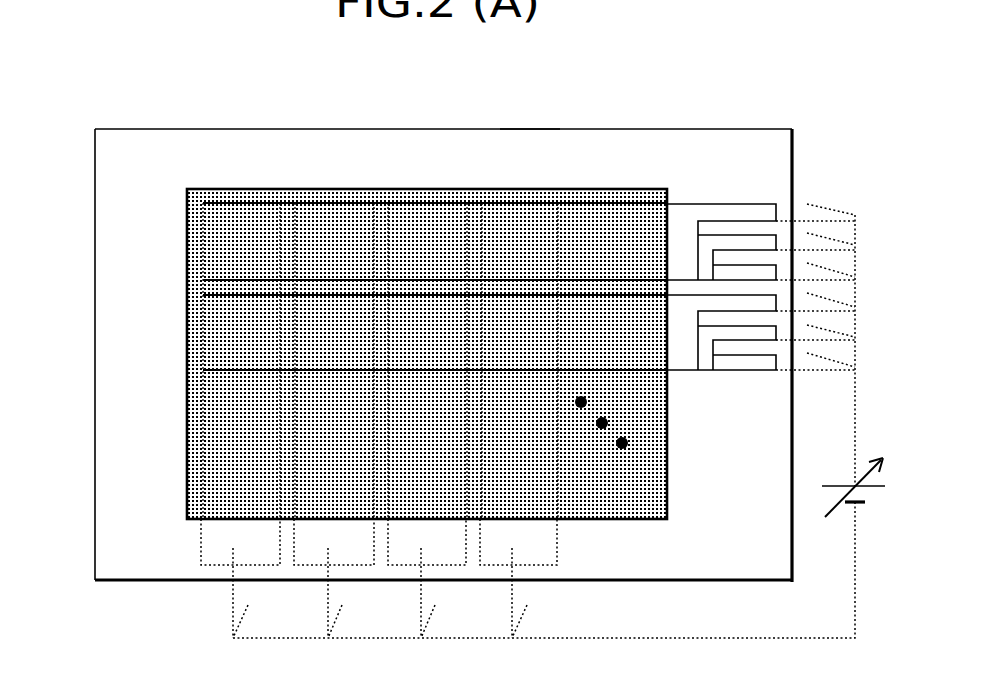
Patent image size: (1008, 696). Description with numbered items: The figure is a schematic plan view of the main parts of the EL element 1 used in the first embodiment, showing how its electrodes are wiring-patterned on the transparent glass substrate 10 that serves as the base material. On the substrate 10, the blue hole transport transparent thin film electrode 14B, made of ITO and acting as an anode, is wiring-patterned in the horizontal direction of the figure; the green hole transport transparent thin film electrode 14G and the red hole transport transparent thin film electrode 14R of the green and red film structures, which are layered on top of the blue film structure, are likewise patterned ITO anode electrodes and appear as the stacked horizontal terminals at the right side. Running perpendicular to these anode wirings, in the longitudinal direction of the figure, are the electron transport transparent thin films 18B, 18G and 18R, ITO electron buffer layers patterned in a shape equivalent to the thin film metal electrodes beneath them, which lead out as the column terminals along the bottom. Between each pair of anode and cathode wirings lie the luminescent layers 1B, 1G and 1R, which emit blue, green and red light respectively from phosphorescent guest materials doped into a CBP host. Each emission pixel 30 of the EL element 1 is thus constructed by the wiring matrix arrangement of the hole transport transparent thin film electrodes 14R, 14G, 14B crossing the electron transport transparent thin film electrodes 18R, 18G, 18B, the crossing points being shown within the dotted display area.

The EL element 1 is at (528, 129).
The transparent glass substrate 10 is at (647, 138).
The emission pixel 30 is at (217, 247).
The luminescent layer that emits red light 1R is at (297, 193).
The luminescent layer that emits green light 1G is at (435, 222).
The luminescent layer that emits blue light 1B is at (435, 222).
The blue hole transport transparent thin film electrode 14B is at (738, 211).
The green hole transport transparent thin film electrode 14G is at (745, 235).
The red hole transport transparent thin film electrode 14R is at (755, 270).
The red electron transport transparent thin film 18R is at (213, 550).
The green electron transport transparent thin film 18G is at (192, 604).
The blue electron transport transparent thin film 18B is at (285, 604).